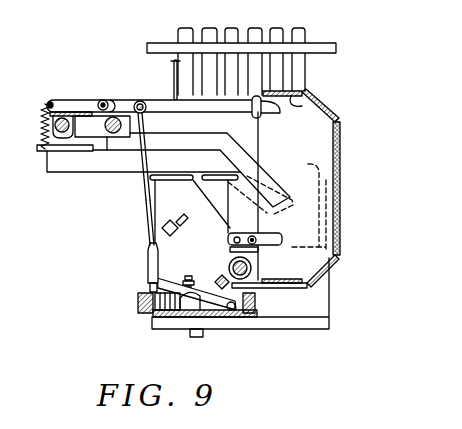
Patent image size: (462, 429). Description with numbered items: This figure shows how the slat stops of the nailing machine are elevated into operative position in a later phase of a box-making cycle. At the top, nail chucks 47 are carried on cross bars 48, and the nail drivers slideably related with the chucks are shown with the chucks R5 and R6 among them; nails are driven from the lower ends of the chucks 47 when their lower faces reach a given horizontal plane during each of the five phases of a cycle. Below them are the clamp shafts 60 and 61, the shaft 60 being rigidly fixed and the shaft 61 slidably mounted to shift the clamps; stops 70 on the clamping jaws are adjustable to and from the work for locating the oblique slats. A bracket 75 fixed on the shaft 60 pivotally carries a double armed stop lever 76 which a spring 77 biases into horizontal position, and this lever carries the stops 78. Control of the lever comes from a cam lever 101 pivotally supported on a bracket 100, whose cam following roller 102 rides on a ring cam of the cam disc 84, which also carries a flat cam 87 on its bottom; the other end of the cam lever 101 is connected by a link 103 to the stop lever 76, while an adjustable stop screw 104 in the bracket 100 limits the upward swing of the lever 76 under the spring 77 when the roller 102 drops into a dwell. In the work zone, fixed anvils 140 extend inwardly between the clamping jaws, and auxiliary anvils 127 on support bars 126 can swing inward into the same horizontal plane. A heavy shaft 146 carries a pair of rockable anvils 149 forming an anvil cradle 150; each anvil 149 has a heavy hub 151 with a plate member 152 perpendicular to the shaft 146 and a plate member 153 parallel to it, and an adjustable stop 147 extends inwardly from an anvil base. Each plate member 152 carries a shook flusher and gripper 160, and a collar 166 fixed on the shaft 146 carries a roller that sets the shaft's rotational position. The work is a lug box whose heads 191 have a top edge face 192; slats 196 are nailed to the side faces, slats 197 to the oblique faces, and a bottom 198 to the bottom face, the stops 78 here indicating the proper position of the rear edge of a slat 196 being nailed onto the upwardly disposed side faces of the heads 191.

The cross bar 48 is at (158, 43).
The roller R5 is at (277, 67).
The roller R6 is at (297, 83).
The nail chuck 47 is at (175, 82).
The stop 70 is at (175, 68).
The double armed stop lever 76 is at (78, 100).
The bracket 75 is at (85, 114).
The clamp shaft 61 is at (107, 150).
The spring 77 is at (41, 128).
The clamp shaft 60 is at (53, 172).
The top edge face 192 is at (240, 156).
The stop 78 is at (253, 113).
The slat 196 is at (308, 101).
The slat 197 is at (338, 118).
The bottom 198 is at (340, 170).
The head 191 is at (311, 142).
The auxiliary anvil 127 is at (308, 167).
The plate member 152 is at (258, 212).
The rockable anvil 149 is at (228, 224).
The adjustable stop 147 is at (190, 213).
The shook flusher and gripper 160 is at (283, 240).
The hub 151 is at (258, 255).
The collar 166 is at (252, 268).
The shaft 146 is at (229, 260).
The adjustable stop screw 104 is at (184, 278).
The bracket 100 is at (195, 298).
The cam lever 101 is at (148, 265).
The fixed anvil 140 is at (150, 177).
The link 103 is at (148, 215).
The flat cam 87 is at (147, 314).
The cam disc 84 is at (247, 318).
The cam following roller 102 is at (222, 318).
The anvil cradle 150 is at (282, 296).
The plate member 153 is at (307, 287).
The auxiliary anvil support bar 126 is at (332, 265).